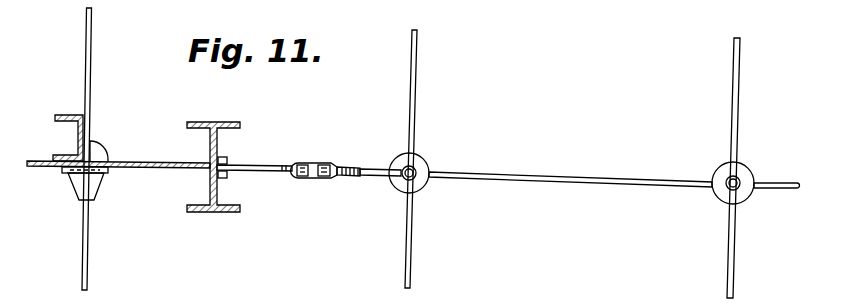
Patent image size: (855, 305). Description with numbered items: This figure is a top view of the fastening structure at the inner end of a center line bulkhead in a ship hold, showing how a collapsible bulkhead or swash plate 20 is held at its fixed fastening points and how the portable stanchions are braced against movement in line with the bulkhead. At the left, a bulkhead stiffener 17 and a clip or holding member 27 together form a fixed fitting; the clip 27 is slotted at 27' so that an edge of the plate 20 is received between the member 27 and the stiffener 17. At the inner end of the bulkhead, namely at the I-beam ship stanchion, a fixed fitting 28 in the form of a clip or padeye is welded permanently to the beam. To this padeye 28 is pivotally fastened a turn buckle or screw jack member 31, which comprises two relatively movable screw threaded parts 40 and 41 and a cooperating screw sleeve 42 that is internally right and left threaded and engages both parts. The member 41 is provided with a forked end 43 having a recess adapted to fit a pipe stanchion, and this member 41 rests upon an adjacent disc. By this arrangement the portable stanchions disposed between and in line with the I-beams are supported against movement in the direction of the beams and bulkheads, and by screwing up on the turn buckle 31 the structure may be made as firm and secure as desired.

The collapsible bulkhead or swash plate 20 is at (86, 57).
The bulkhead stiffener 17 is at (55, 138).
The clip or holding member 27 is at (104, 159).
The slot 27' is at (118, 150).
The fixed fitting (clip or padeye) 28 is at (229, 163).
The screw threaded part 40 is at (275, 171).
The screw sleeve 42 is at (316, 162).
The turn buckle or screw jack member 31 is at (364, 168).
The screw threaded part 41 is at (367, 177).
The forked end 43 is at (401, 181).